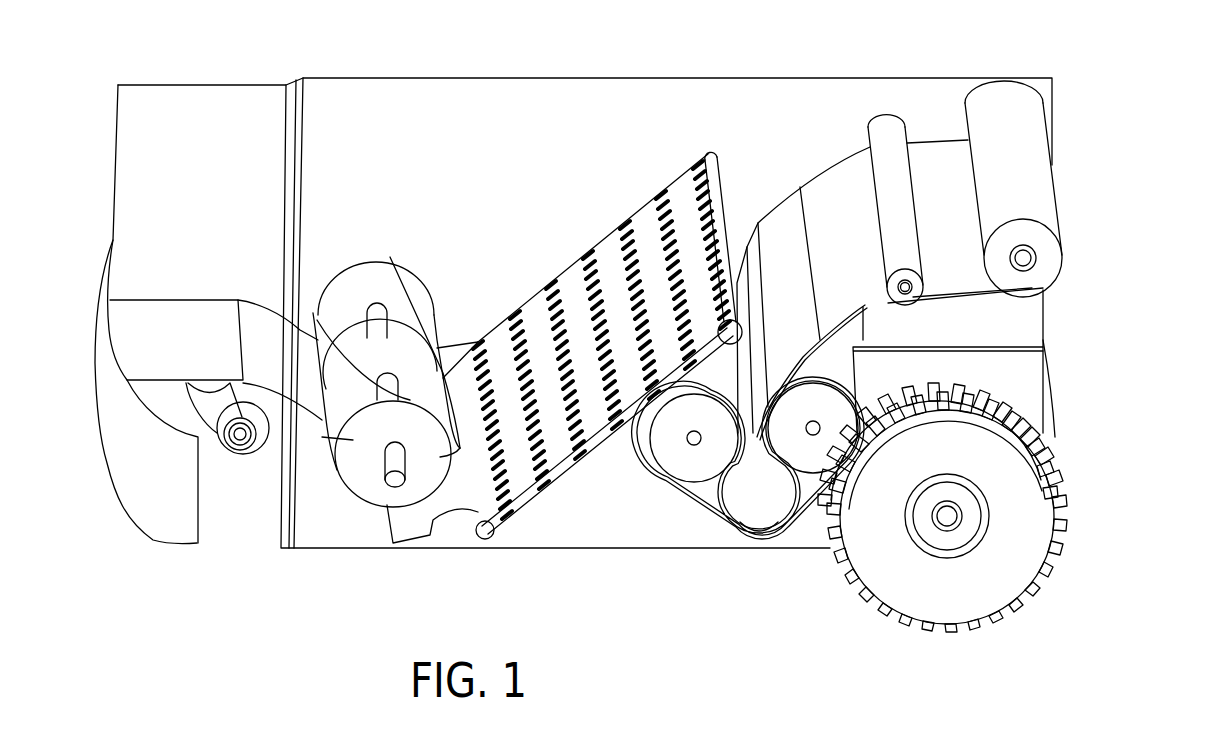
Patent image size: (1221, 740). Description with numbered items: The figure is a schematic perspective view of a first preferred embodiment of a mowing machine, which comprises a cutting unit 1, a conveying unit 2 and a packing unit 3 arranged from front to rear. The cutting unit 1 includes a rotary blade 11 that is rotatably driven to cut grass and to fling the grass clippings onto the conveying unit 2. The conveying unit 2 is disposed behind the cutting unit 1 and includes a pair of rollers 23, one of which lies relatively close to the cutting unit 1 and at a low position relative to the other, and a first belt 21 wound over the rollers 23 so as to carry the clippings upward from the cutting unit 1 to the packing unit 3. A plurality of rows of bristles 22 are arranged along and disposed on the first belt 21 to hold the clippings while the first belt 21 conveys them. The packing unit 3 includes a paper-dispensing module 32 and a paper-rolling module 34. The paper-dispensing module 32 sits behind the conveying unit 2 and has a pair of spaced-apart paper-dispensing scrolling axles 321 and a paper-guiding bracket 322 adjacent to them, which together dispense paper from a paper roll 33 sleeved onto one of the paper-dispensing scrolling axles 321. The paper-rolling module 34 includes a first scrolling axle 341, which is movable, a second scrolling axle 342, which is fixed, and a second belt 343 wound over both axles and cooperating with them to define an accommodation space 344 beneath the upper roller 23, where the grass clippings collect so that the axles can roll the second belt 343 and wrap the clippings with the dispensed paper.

The cutting unit 1 is at (394, 245).
The rotary blade 11 is at (313, 313).
The conveying unit 2 is at (589, 357).
The first belt 21 is at (610, 245).
The rows of bristles 22 is at (530, 325).
The rollers 23 is at (708, 153).
The packing unit 3 is at (806, 139).
The paper roll 33 is at (1002, 82).
The paper-dispensing module 32 is at (1030, 268).
The paper-dispensing scrolling axles 321 is at (1023, 258).
The paper-guiding bracket 322 is at (1007, 292).
The paper-rolling module 34 is at (743, 533).
The first scrolling axle 341 is at (813, 463).
The second scrolling axle 342 is at (682, 470).
The second belt 343 is at (738, 532).
The accommodation space 344 is at (765, 556).